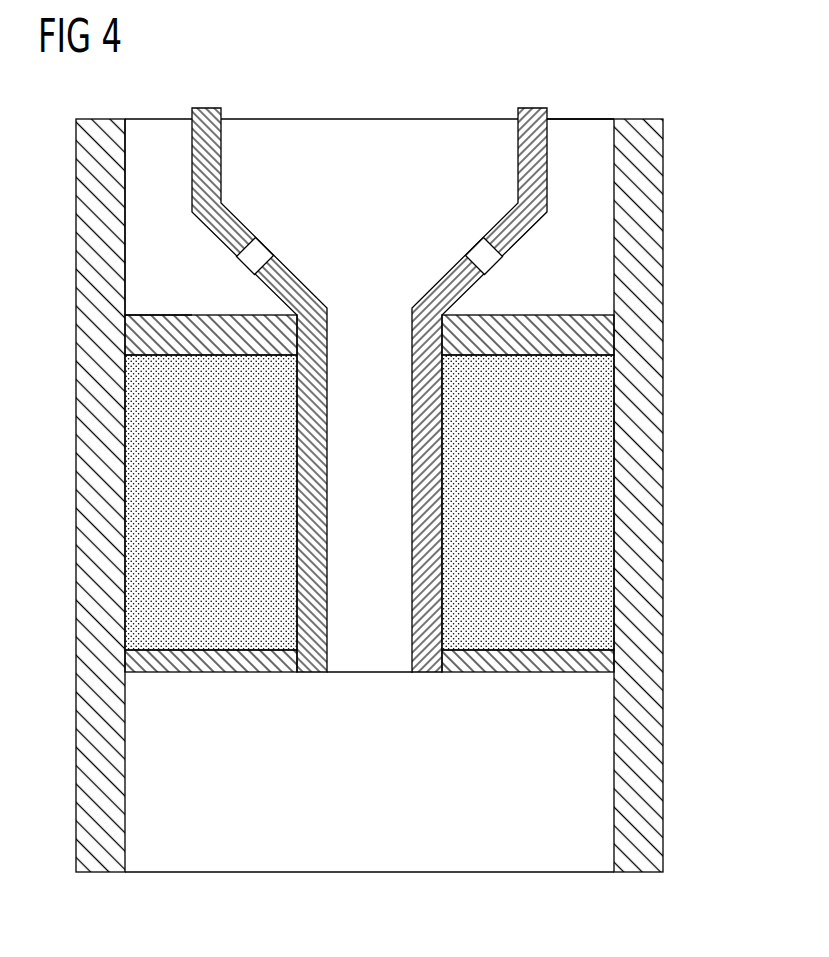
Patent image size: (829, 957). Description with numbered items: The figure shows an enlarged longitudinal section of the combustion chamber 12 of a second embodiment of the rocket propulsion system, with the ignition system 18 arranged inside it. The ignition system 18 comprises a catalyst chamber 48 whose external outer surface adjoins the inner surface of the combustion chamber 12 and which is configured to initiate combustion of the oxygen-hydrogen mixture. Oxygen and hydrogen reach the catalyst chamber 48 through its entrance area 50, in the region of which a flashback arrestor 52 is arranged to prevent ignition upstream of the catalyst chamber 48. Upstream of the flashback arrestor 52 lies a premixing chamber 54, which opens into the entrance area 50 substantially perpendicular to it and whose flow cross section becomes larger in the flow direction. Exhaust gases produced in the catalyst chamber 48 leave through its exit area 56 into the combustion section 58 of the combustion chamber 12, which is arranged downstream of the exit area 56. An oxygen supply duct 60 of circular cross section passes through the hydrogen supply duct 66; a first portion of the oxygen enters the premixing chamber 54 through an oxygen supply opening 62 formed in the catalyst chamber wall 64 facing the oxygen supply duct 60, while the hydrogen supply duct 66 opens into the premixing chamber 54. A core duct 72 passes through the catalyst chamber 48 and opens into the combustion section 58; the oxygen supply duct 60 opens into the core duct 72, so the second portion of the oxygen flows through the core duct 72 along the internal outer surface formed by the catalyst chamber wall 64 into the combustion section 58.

The combustion chamber 12 is at (665, 344).
The ignition system 18 is at (224, 147).
The catalyst chamber 48 is at (600, 408).
The entrance area 50 is at (193, 312).
The flashback arrestor 52 is at (140, 347).
The premixing chamber 54 is at (155, 228).
The exit area 56 is at (210, 678).
The combustion section 58 is at (444, 860).
The oxygen supply duct 60 is at (372, 126).
The oxygen supply opening 62 is at (259, 229).
The catalyst chamber wall 64 is at (540, 110).
The hydrogen supply duct 66 is at (580, 128).
The core duct 72 is at (370, 656).